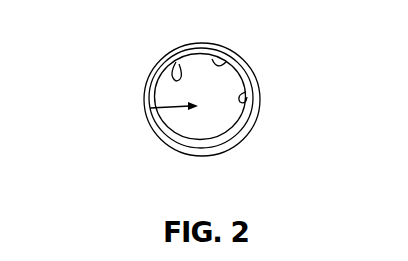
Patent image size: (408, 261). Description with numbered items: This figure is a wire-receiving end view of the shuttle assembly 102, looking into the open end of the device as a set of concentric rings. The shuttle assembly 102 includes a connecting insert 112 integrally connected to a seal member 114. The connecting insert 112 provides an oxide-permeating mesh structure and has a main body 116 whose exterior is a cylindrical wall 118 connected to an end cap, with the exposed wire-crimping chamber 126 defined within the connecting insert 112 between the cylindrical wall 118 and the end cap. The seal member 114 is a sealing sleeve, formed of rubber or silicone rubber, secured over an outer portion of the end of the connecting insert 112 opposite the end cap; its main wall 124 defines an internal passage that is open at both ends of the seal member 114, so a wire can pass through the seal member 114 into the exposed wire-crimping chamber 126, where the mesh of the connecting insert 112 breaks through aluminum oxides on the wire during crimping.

The shuttle assembly 102 is at (143, 48).
The connecting insert 112 is at (222, 63).
The seal member 114 is at (246, 132).
The main body 116 is at (176, 62).
The cylindrical wall 118 is at (248, 97).
The main wall 124 is at (148, 125).
The exposed wire-crimping chamber 126 is at (150, 108).